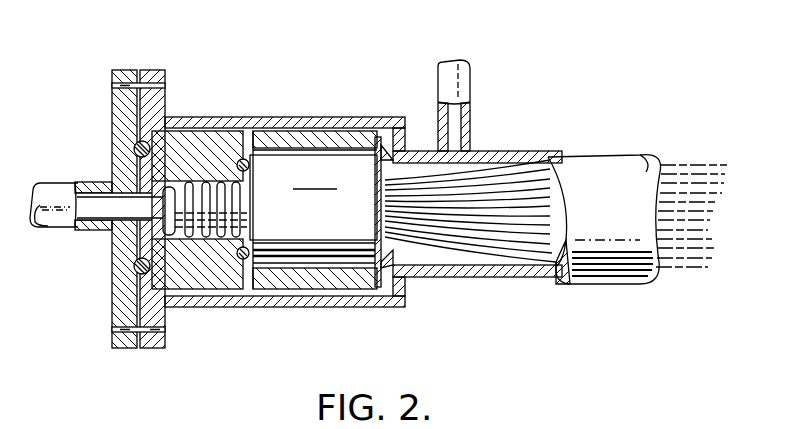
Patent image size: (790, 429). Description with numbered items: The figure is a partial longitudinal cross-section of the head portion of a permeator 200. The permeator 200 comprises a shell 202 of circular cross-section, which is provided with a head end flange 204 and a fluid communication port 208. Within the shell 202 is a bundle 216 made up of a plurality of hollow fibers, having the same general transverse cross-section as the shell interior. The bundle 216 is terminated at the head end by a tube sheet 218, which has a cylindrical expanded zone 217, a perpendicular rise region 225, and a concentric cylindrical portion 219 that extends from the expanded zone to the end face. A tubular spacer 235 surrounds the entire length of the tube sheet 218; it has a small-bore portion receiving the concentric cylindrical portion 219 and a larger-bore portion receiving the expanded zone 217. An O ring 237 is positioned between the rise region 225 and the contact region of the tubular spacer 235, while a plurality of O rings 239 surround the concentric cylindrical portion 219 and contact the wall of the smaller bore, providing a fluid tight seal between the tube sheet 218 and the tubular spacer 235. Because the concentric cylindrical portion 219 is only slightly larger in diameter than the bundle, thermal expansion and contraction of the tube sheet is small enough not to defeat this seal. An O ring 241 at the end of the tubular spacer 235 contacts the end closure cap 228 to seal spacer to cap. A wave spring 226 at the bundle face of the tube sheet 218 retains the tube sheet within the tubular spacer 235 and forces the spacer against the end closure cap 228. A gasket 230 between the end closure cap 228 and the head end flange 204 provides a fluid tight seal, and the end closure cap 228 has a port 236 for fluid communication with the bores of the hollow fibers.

The permeator 200 is at (494, 286).
The shell 202 is at (592, 155).
The head end flange 204 is at (153, 70).
The fluid communication port 208 is at (470, 83).
The bundle 216 is at (488, 190).
The cylindrical expanded zone 217 is at (312, 242).
The tube sheet 218 is at (321, 212).
The concentric cylindrical portion 219 is at (173, 212).
The perpendicular rise region 225 is at (255, 242).
The wave spring 226 is at (398, 158).
The end closure cap 228 is at (113, 110).
The gasket 230 is at (143, 103).
The tubular spacer 235 is at (180, 153).
The port 236 is at (63, 182).
The O ring 237 is at (236, 160).
The O rings 239 is at (183, 240).
The O ring 241 is at (135, 146).